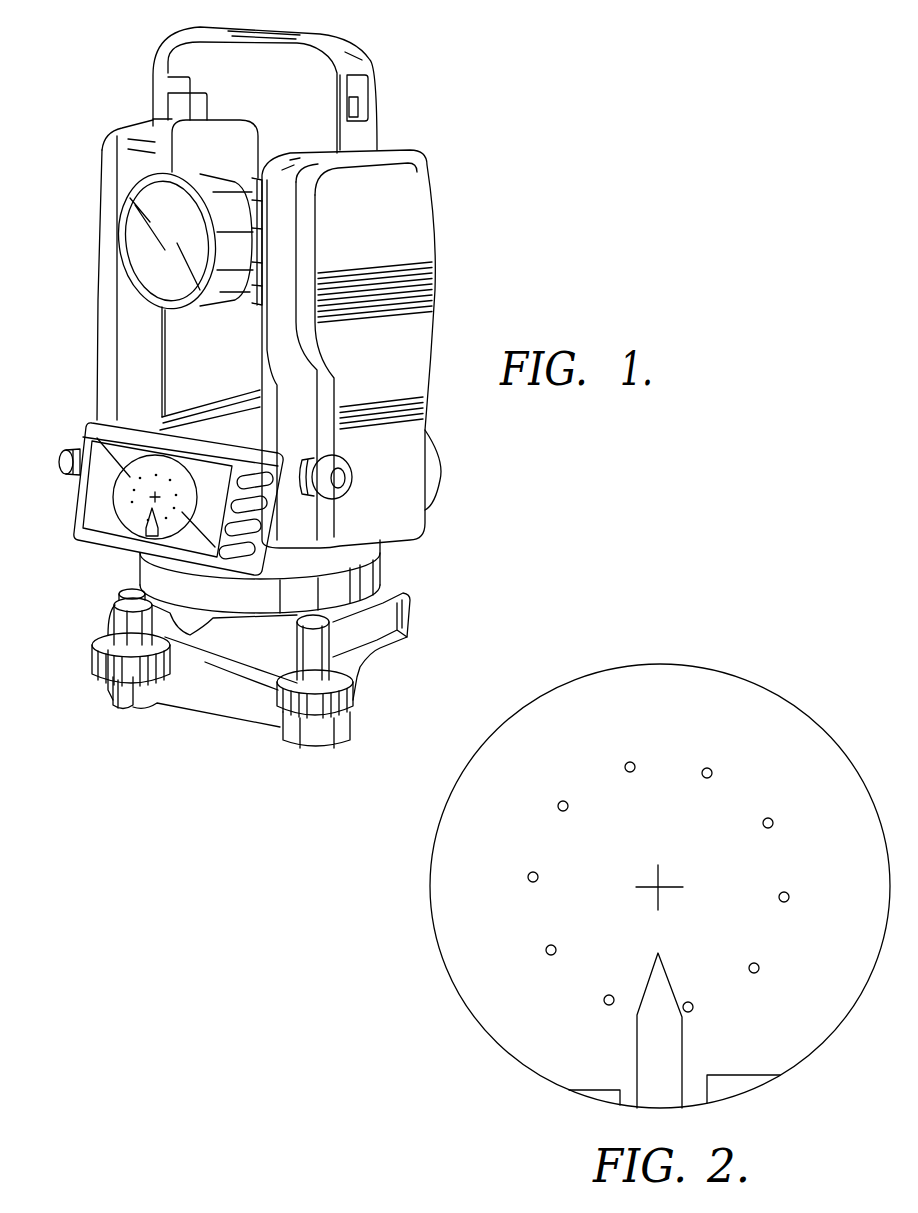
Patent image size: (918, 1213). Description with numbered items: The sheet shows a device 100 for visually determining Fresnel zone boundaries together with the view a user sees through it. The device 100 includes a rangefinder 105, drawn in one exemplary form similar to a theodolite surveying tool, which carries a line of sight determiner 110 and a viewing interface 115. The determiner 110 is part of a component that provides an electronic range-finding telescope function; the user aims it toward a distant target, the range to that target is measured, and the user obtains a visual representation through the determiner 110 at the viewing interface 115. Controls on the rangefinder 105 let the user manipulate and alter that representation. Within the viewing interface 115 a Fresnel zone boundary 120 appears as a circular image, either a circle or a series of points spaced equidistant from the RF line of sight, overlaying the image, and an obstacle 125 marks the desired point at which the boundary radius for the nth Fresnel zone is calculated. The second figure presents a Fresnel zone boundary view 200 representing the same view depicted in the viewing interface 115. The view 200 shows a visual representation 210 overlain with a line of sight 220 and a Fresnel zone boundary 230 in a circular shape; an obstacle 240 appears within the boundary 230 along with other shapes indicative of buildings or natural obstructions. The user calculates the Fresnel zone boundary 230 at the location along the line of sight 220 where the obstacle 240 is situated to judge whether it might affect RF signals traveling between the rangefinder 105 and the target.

In FIG. 1, the device 100 is at (496, 112).
In FIG. 1, the rangefinder 105 is at (432, 238).
In FIG. 1, the line of sight determiner 110 is at (128, 243).
In FIG. 1, the viewing interface 115 is at (102, 503).
In FIG. 1, the Fresnel zone boundary 120 is at (138, 510).
In FIG. 1, the obstacle 125 is at (140, 527).
In FIG. 2, the Fresnel zone boundary view 200 is at (370, 940).
In FIG. 2, the visual representation 210 is at (447, 968).
In FIG. 2, the line of sight 220 is at (660, 882).
In FIG. 2, the Fresnel zone boundary 230 is at (768, 829).
In FIG. 2, the obstacle 240 is at (682, 1043).